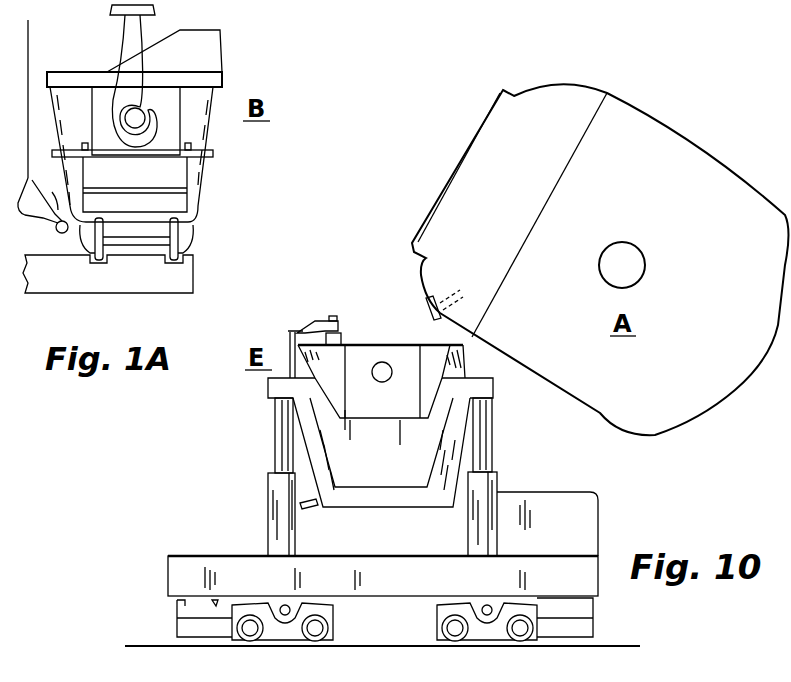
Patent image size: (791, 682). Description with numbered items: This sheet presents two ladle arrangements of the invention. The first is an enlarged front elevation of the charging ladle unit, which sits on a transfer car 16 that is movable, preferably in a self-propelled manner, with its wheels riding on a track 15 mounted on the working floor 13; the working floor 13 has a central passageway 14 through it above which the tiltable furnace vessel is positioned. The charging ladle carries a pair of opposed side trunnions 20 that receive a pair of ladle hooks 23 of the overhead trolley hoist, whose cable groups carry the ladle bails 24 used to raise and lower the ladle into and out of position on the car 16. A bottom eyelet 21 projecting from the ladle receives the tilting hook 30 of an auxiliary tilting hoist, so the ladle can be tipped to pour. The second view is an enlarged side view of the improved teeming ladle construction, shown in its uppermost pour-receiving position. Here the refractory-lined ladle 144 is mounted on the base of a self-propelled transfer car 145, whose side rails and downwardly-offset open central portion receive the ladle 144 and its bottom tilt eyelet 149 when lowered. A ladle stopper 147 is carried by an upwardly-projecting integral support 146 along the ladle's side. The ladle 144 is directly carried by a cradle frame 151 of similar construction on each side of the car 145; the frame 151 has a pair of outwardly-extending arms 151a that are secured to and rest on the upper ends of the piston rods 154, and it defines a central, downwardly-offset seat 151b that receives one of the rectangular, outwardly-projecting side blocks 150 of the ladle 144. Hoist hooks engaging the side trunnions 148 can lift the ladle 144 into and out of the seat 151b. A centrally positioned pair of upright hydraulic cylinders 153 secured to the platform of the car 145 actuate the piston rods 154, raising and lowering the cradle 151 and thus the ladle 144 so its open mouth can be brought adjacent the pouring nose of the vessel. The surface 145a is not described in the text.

In FIG. 1A, the working floor 13 is at (85, 288).
In FIG. 1A, the central passageway 14 is at (197, 266).
In FIG. 1A, the track 15 is at (75, 256).
In FIG. 1A, the transfer car 16 is at (185, 170).
In FIG. 1A, the side trunnions 20 is at (145, 110).
In FIG. 1A, the bottom eyelet 21 is at (54, 190).
In FIG. 1A, the ladle hooks 23 is at (128, 40).
In FIG. 1A, the ladle bails 24 is at (157, 10).
In FIG. 1A, the tilting hook 30 is at (43, 218).
In FIG. 10, the teeming ladle 144 is at (456, 359).
In FIG. 10, the self-propelled transfer car 145 is at (168, 583).
In FIG. 10, the frame top surface 145a is at (366, 556).
In FIG. 10, the integral support 146 is at (291, 333).
In FIG. 10, the ladle stopper 147 is at (348, 333).
In FIG. 10, the side trunnions 148 is at (378, 361).
In FIG. 10, the bottom tilt eyelet 149 is at (307, 512).
In FIG. 10, the side blocks 150 is at (397, 356).
In FIG. 10, the cradle frame 151 is at (330, 482).
In FIG. 10, the arms 151a is at (268, 390).
In FIG. 10, the downwardly-offset seat 151b is at (362, 418).
In FIG. 10, the hydraulic cylinders 153 is at (268, 492).
In FIG. 10, the piston rods 154 is at (275, 425).